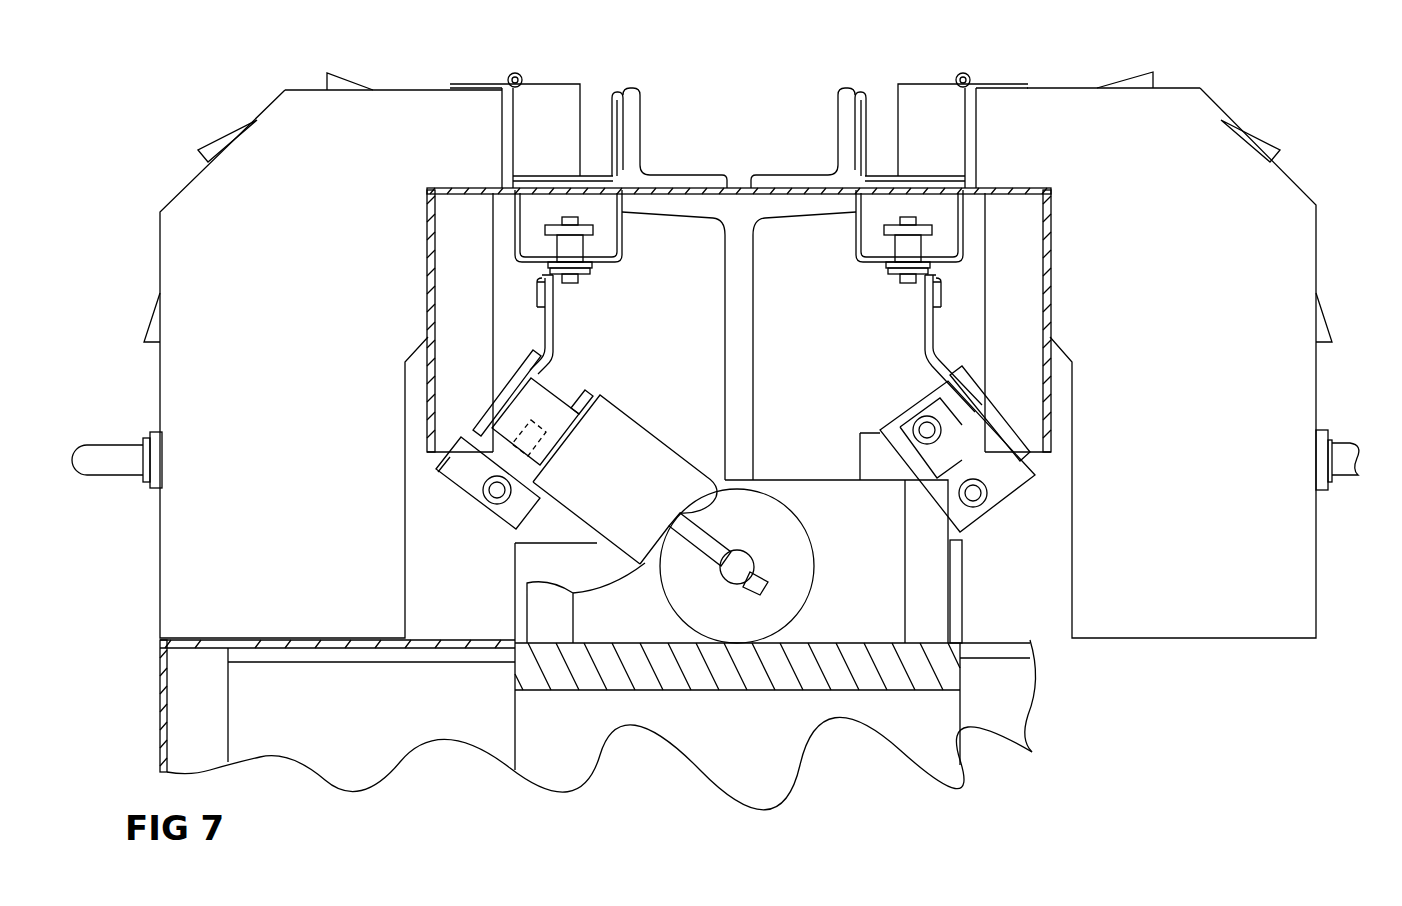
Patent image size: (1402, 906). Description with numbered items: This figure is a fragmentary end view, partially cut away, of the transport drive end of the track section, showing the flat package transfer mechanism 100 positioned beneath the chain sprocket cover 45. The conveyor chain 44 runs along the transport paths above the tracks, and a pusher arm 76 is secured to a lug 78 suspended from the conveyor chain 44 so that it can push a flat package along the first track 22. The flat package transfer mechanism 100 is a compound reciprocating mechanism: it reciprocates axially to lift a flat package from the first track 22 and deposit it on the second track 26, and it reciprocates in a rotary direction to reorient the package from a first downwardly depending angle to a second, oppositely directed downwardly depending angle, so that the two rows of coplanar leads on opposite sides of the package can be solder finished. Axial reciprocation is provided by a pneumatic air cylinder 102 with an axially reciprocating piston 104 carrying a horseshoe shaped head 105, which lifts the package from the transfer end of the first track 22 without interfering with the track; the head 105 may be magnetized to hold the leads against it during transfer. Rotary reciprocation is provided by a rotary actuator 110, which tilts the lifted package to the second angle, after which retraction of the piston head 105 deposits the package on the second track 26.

The chain sprocket cover 45 is at (280, 93).
The conveyor chain 44 is at (580, 252).
The lug 78 is at (545, 297).
The pusher arm 76 is at (553, 340).
The flat package transfer mechanism 100 is at (586, 448).
The pneumatic air cylinder 102 is at (640, 514).
The piston 104 is at (545, 423).
The horseshoe shaped head 105 is at (483, 414).
The first track 22 is at (460, 492).
The second track 26 is at (1028, 483).
The rotary actuator 110 is at (815, 553).